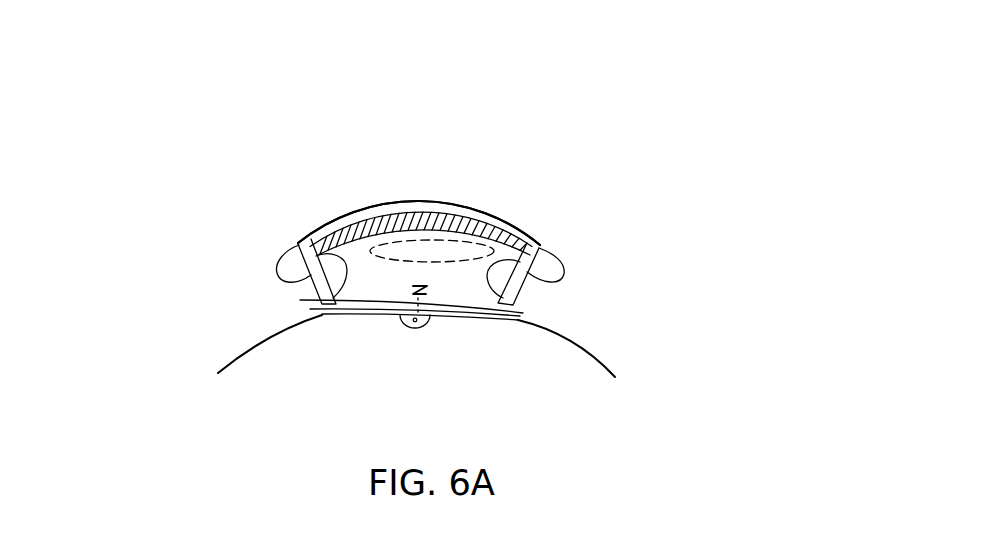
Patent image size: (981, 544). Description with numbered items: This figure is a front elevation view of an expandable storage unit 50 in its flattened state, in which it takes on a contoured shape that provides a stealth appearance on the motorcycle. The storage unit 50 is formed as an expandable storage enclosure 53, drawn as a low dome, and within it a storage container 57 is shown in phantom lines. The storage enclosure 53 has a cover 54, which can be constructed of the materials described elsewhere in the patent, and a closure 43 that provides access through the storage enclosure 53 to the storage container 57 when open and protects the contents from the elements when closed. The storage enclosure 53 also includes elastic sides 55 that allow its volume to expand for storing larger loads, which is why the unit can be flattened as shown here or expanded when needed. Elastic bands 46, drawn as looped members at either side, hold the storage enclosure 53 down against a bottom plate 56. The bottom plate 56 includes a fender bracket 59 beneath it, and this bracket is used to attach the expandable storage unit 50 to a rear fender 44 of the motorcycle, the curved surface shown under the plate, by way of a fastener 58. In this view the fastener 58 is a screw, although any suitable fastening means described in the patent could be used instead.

The storage unit 50 is at (407, 126).
The storage enclosure 53 is at (422, 203).
The closure 43 is at (490, 223).
The cover 54 is at (532, 222).
The storage container 57 is at (362, 254).
The elastic bands 46 is at (296, 247).
The elastic sides 55 is at (300, 300).
The bottom plate 56 is at (322, 314).
The fastener 58 is at (425, 291).
The fender bracket 59 is at (434, 321).
The rear fender 44 is at (280, 353).